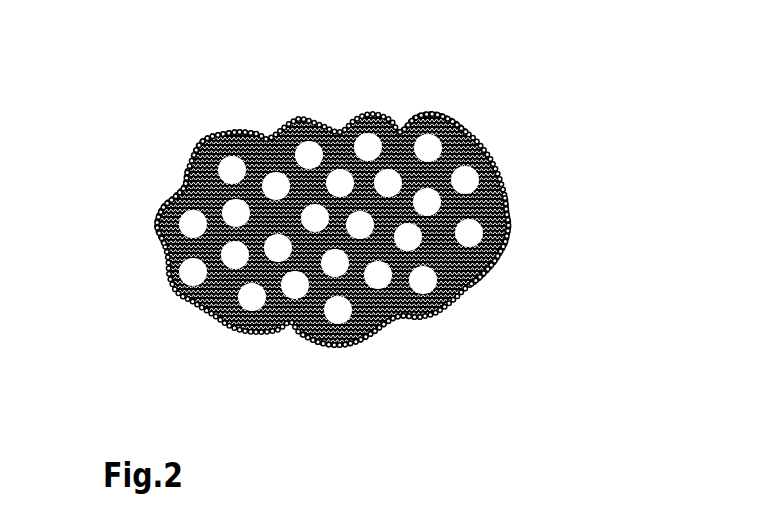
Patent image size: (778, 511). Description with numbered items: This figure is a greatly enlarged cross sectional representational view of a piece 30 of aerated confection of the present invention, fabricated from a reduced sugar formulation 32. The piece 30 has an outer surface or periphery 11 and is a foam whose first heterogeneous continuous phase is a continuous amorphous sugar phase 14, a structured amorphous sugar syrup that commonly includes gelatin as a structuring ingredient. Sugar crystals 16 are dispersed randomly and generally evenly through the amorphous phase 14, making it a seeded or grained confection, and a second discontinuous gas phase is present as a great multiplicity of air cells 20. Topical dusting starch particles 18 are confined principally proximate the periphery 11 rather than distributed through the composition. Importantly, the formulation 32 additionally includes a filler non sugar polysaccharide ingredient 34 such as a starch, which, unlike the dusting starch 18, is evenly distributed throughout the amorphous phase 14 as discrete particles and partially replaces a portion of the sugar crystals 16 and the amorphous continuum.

The periphery 11 is at (305, 120).
The continuous amorphous sugar phase 14 is at (207, 147).
The sugar crystals 16 is at (512, 220).
The topical dusting starch particles 18 is at (163, 243).
The air cells 20 is at (470, 233).
The piece 30 is at (339, 236).
The reduced sugar formulation 32 is at (433, 112).
The filler non sugar polysaccharide ingredient 34 is at (323, 347).